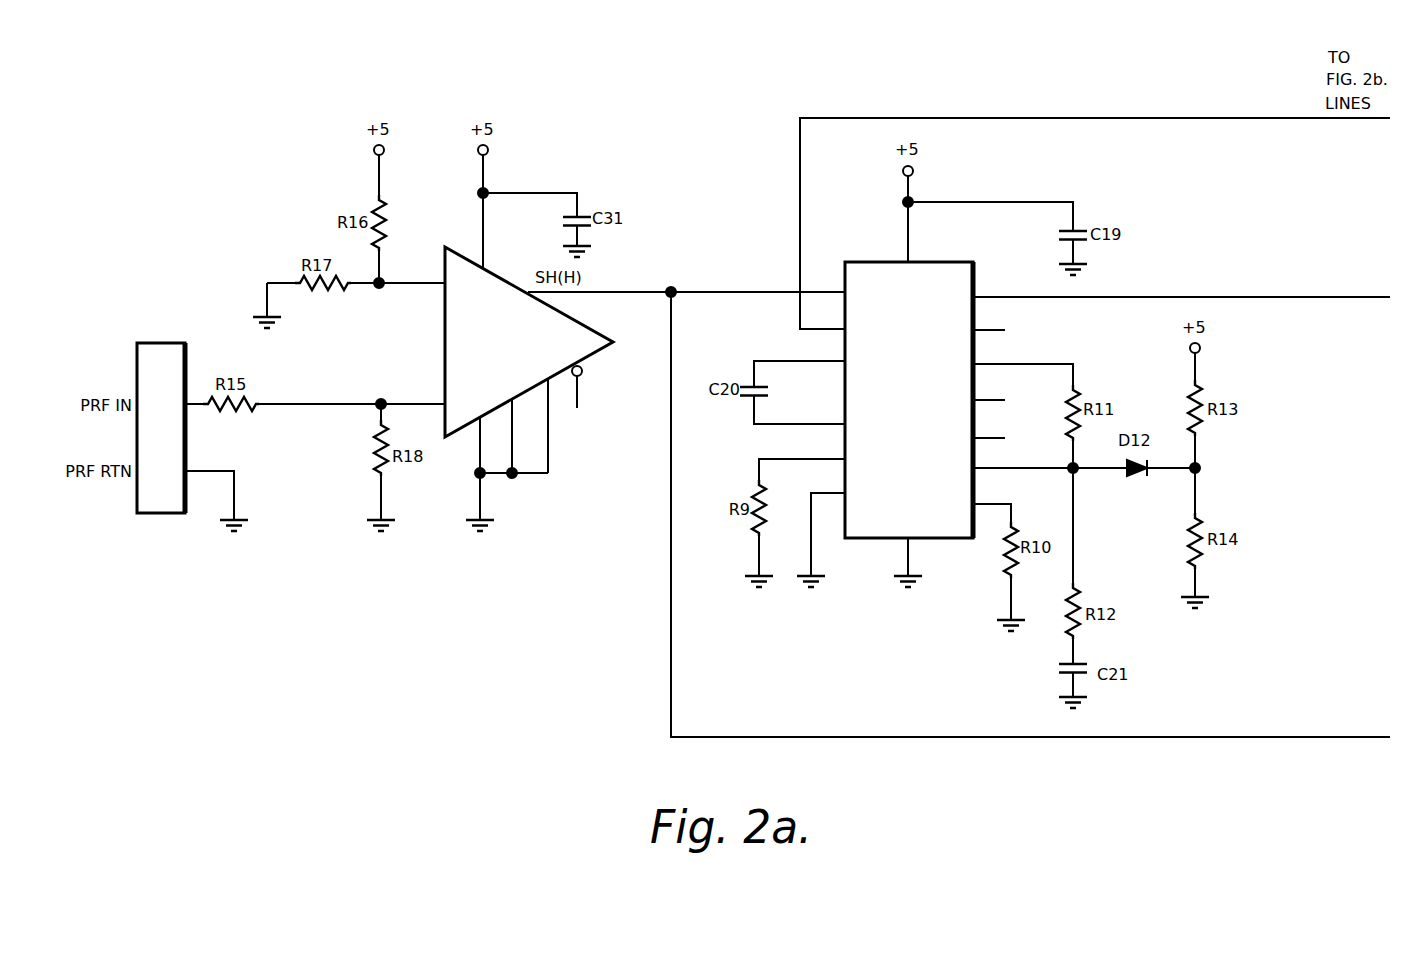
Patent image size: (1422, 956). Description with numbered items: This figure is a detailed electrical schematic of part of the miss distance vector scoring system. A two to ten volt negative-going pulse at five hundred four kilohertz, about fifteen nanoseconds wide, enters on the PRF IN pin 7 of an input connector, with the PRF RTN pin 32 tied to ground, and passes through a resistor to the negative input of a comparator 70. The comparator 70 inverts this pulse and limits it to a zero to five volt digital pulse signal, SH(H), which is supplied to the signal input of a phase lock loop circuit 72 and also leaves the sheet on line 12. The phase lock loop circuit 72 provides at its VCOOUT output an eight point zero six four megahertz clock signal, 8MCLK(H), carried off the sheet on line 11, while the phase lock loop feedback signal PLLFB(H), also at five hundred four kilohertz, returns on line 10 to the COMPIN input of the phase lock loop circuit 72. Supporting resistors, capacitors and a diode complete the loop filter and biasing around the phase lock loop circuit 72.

The PRF IN connector pin 7 is at (179, 404).
The PRF RTN connector pin 32 is at (199, 496).
The comparator 70 is at (441, 345).
The phase lock loop circuit 72 is at (883, 262).
The PLLFB(H) line to FIG. 2b 10 is at (1110, 212).
The 8MCLK(H) line to FIG. 2b 11 is at (1196, 289).
The SH(H) line to FIG. 2b 12 is at (1045, 520).